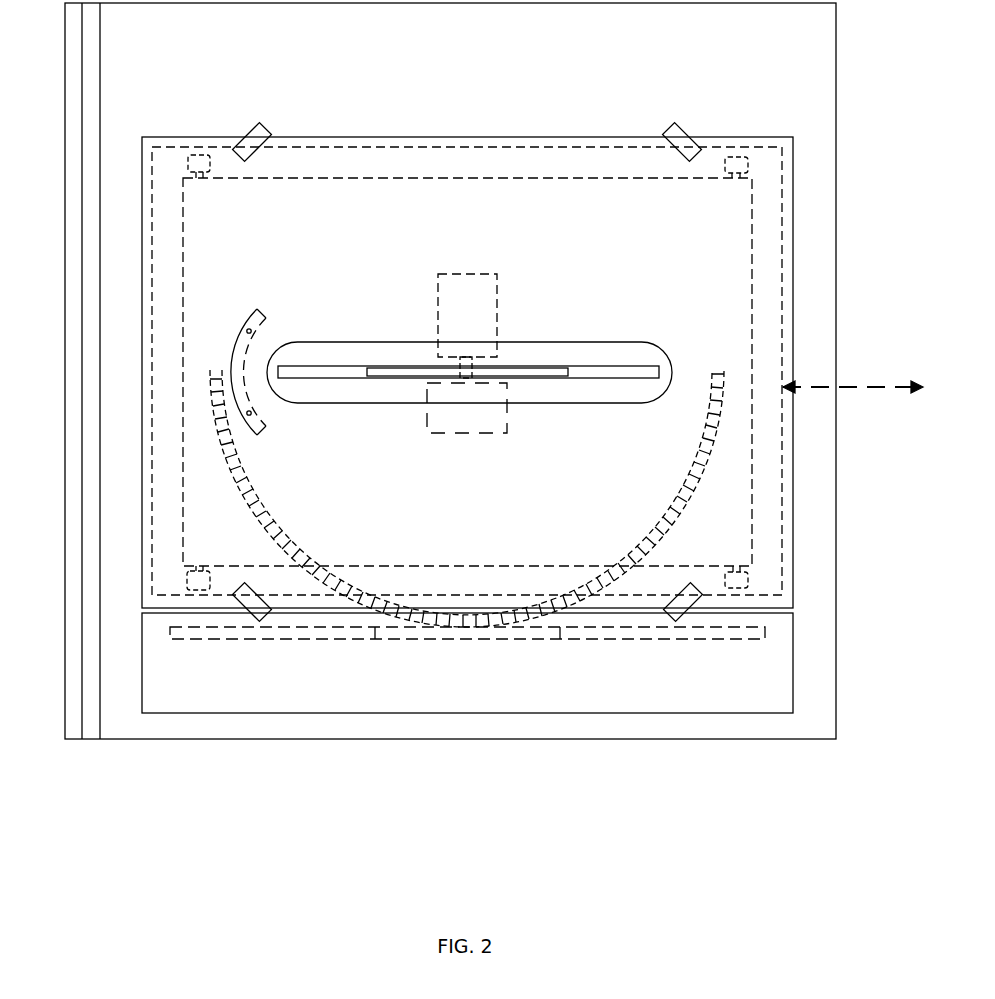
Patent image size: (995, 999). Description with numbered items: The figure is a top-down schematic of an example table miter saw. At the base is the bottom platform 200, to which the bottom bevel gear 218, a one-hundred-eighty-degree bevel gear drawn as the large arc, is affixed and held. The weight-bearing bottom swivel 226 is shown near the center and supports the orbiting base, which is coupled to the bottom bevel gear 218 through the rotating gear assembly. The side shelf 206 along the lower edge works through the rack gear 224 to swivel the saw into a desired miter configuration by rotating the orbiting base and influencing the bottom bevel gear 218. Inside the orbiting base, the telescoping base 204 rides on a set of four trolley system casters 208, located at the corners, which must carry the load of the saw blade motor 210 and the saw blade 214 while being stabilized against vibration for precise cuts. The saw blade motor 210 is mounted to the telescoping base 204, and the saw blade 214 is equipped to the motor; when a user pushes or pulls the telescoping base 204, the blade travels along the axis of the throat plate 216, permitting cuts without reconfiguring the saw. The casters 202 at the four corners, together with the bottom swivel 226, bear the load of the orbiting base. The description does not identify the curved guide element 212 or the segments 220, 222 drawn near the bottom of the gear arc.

The bottom platform 200 is at (459, 57).
The casters 202 is at (260, 124).
The telescoping base 204 is at (447, 222).
The side shelf 206 is at (447, 699).
The trolley system casters 208 is at (187, 164).
The saw blade motor 210 is at (450, 311).
The curved guide member 212 is at (235, 370).
The saw blade 214 is at (400, 372).
The throat plate 216 is at (623, 392).
The bottom bevel gear 218 is at (292, 548).
The track segment 220 is at (388, 616).
The track segment 222 is at (545, 625).
The rack gear 224 is at (300, 634).
The bottom swivel 226 is at (450, 419).